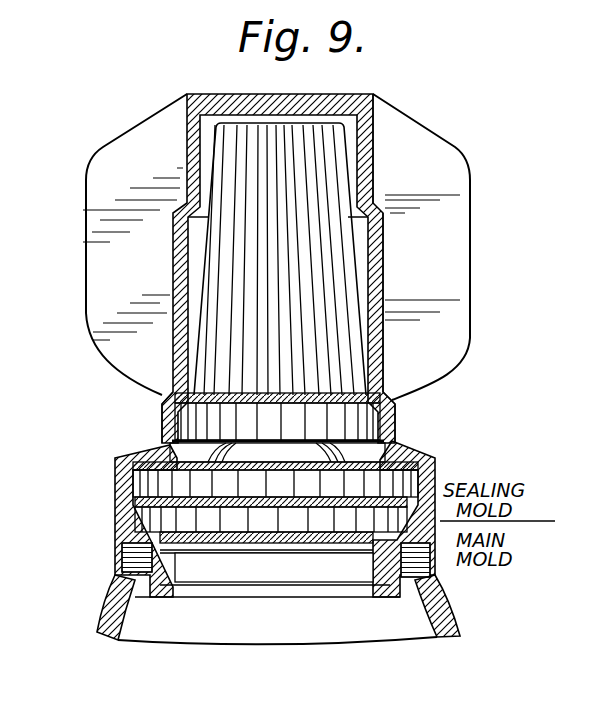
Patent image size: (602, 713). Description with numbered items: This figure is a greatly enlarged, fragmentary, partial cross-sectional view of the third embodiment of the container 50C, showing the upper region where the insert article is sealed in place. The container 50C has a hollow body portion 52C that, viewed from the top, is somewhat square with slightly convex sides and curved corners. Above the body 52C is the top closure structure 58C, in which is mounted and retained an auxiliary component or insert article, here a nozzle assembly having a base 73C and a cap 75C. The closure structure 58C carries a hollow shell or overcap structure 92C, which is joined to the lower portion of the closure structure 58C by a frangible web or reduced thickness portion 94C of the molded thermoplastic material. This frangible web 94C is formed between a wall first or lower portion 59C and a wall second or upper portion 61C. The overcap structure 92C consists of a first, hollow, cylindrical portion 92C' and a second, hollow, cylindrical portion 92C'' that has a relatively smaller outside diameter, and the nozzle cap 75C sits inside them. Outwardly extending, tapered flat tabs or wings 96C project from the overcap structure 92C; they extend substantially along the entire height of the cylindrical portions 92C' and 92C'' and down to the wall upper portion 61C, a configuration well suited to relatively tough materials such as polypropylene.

The tabs or wings 96C is at (108, 208).
The overcap structure 92C is at (312, 268).
The second hollow cylindrical portion 92C'' is at (410, 148).
The first hollow cylindrical portion 92C' is at (417, 302).
The cap 75C is at (340, 285).
The frangible web 94C is at (162, 413).
The wall first or lower portion 59C is at (160, 428).
The top closure structure 58C is at (111, 466).
The container 50C is at (97, 543).
The base 73C is at (202, 455).
The body portion 52C is at (106, 612).
The wall second or upper portion 61C is at (166, 393).